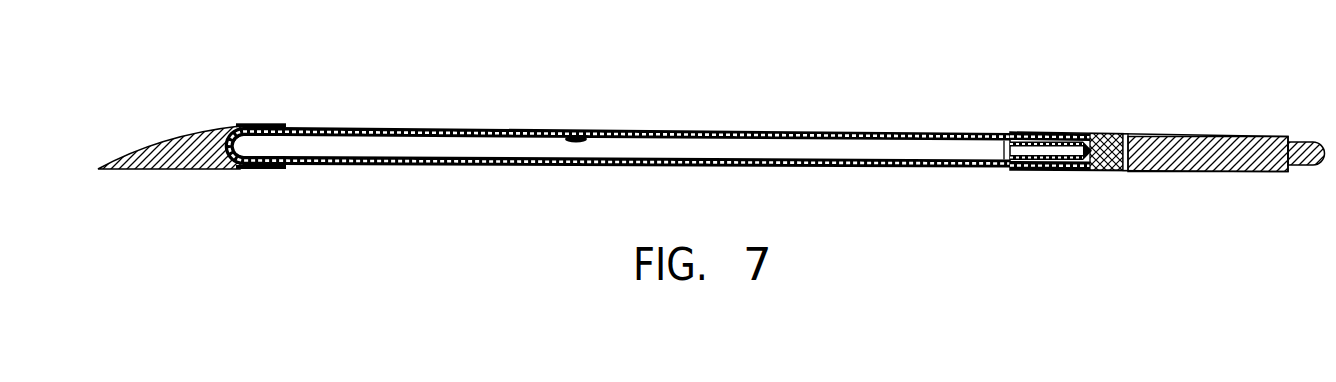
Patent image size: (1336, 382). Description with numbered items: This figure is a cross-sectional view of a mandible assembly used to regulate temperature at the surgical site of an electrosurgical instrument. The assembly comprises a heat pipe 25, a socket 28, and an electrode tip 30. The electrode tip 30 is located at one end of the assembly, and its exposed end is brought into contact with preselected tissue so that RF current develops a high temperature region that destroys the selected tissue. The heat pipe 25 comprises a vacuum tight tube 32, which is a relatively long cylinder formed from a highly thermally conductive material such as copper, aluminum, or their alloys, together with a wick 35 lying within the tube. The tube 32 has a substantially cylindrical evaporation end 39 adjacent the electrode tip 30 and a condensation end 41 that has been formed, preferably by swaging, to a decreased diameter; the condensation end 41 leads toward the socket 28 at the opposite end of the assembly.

The heat pipe 25 is at (792, 132).
The socket 28 is at (1190, 136).
The electrode tip 30 is at (170, 139).
The vacuum tight tube 32 is at (383, 129).
The wick 35 is at (595, 131).
The evaporation end 39 is at (290, 126).
The condensation end 41 is at (1048, 133).